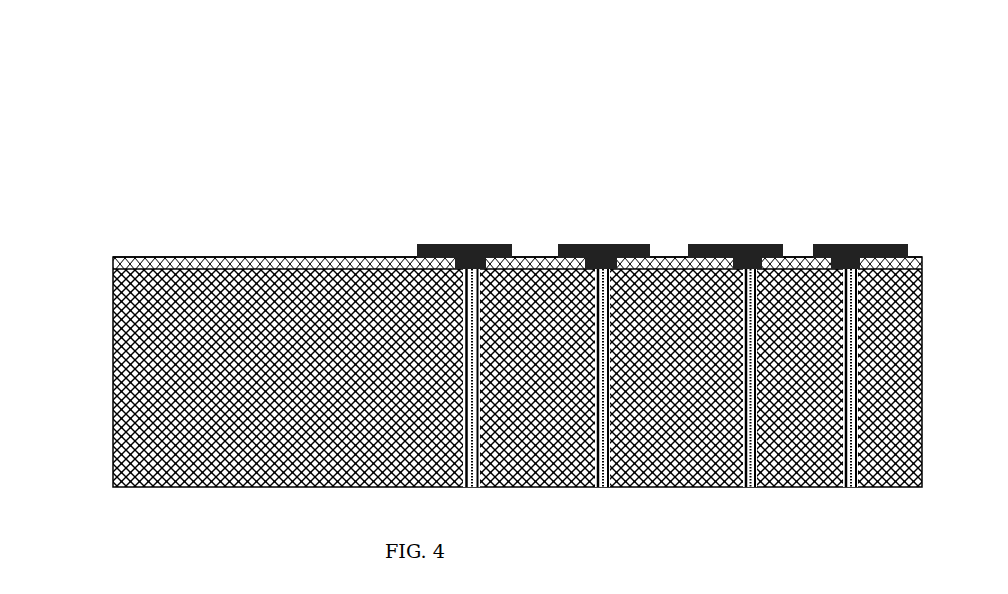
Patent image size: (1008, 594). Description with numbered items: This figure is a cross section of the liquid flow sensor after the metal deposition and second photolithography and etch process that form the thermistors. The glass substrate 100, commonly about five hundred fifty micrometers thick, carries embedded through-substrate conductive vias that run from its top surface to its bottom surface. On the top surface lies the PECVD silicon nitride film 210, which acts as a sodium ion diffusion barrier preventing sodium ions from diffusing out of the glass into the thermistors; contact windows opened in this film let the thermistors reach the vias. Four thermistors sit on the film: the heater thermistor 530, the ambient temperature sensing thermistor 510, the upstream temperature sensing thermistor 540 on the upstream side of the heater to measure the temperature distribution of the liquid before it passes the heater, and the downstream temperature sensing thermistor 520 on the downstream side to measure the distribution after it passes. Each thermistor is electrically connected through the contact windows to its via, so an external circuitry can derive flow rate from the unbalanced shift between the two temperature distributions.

The glass substrate 100 is at (146, 390).
The silicon nitride film 210 is at (285, 254).
The ambient temperature sensing thermistor 510 is at (844, 229).
The downstream temperature sensing thermistor 520 is at (743, 229).
The heater thermistor 530 is at (596, 229).
The upstream temperature sensing thermistor 540 is at (466, 229).